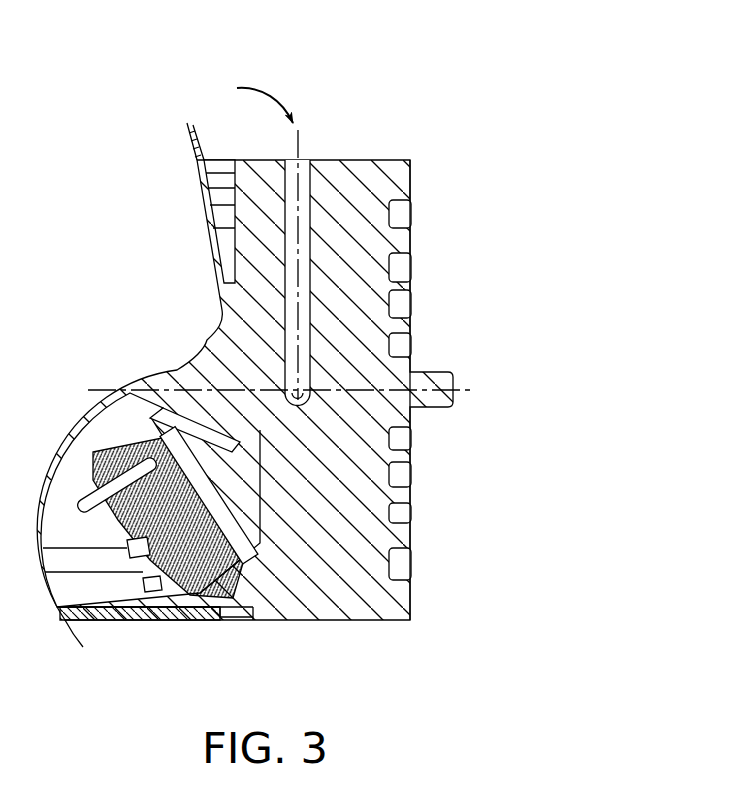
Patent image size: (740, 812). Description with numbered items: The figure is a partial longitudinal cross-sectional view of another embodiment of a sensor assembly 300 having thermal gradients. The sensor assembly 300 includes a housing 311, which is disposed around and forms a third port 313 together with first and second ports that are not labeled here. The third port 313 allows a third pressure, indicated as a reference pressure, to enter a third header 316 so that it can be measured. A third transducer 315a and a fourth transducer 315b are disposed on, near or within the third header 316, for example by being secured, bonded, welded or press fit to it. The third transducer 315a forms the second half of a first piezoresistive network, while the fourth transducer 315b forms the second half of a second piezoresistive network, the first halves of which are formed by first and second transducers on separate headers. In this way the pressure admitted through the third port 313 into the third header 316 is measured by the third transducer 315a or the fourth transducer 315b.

The sensor assembly 300 is at (290, 38).
The housing 311 is at (218, 340).
The third port 313 is at (340, 163).
The third transducer 315a is at (205, 483).
The fourth transducer 315b is at (311, 518).
The third header 316 is at (175, 610).